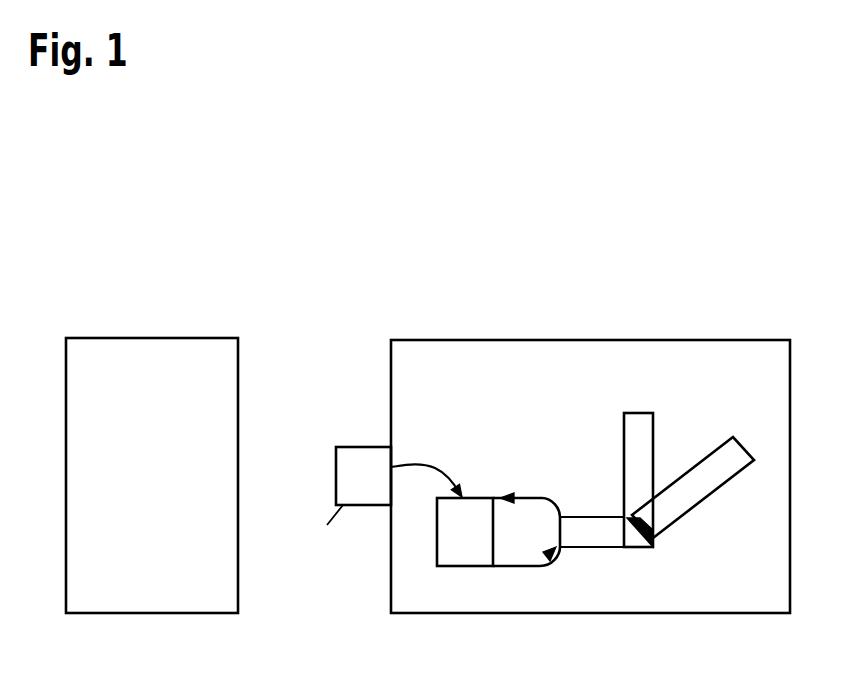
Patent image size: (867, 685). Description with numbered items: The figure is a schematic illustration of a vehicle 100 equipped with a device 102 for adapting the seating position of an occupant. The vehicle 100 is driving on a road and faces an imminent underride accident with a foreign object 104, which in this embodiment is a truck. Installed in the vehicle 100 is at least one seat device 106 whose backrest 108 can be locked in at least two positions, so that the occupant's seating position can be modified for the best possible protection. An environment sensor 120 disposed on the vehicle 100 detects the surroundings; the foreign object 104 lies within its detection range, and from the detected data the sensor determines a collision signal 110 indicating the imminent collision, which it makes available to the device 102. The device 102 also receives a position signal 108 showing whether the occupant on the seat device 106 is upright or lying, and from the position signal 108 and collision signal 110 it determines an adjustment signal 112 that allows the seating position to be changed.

The vehicle 100 is at (690, 340).
The device for adapting a seating position 102 is at (462, 566).
The foreign object 104 is at (154, 338).
The seat device 106 is at (641, 402).
The position signal 108 is at (540, 498).
The collision signal 110 is at (430, 465).
The adjustment signal 112 is at (536, 566).
The environment sensor 120 is at (365, 447).